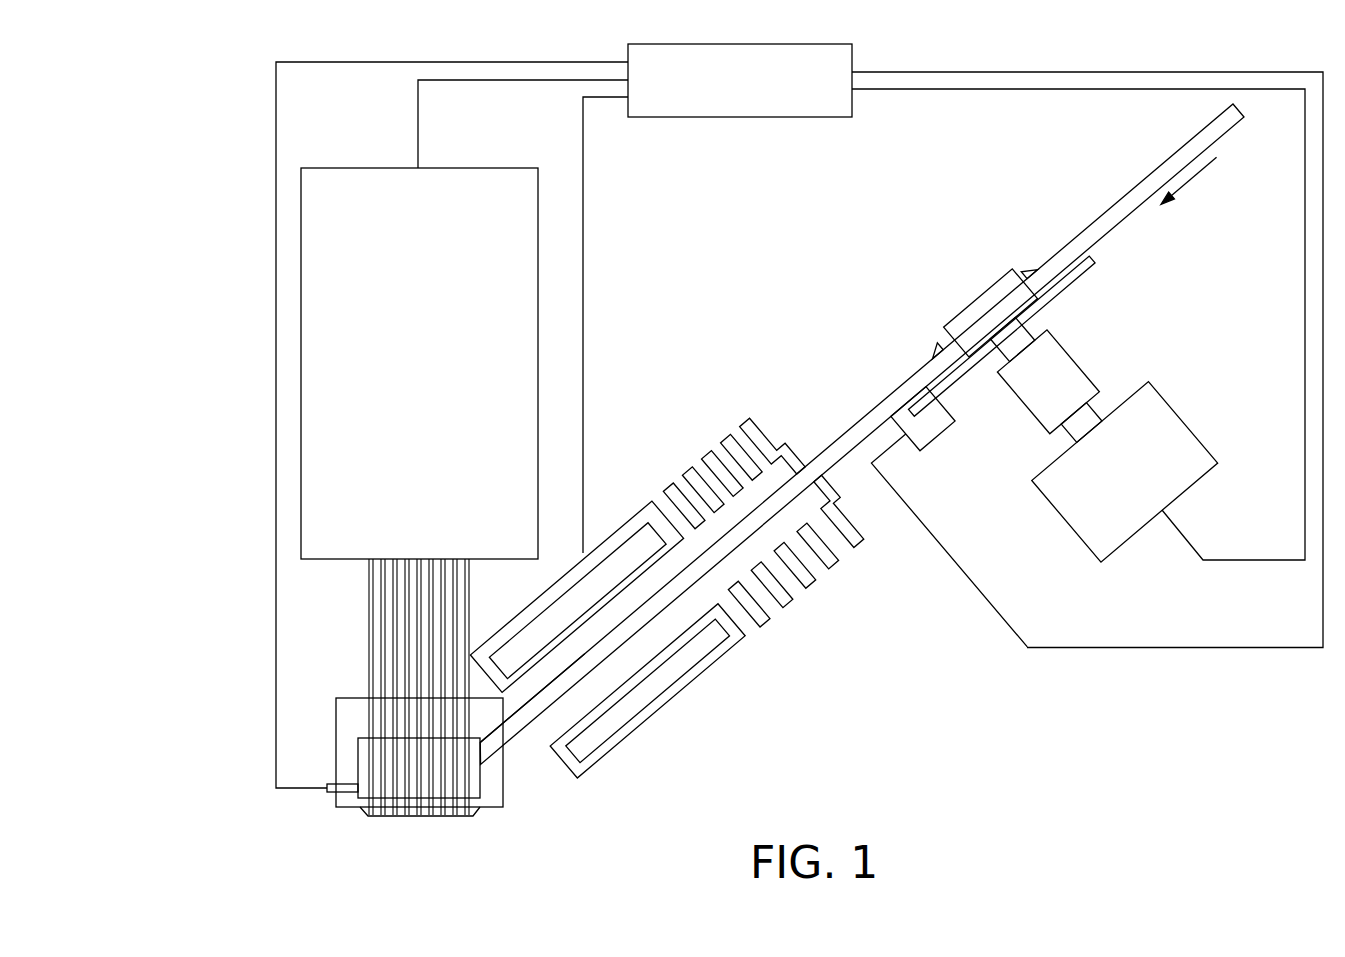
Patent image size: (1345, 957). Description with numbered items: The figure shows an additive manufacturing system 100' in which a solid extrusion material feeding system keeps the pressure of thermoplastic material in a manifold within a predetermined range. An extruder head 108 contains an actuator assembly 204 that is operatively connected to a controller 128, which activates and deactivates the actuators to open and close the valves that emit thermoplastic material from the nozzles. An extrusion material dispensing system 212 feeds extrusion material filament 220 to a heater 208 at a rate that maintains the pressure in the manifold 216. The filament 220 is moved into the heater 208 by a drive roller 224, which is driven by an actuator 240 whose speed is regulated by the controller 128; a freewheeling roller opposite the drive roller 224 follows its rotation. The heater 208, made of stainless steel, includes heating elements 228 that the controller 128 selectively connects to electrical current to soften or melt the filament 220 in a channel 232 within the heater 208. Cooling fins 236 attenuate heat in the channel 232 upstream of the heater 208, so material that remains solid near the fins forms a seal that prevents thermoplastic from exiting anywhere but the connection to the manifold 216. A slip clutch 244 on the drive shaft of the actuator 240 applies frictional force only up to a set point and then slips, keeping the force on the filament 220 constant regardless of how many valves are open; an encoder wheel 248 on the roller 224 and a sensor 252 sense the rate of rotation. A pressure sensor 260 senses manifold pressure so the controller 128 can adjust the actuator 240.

The additive manufacturing system 100' is at (731, 424).
The extruder head 108 is at (410, 698).
The controller 128 is at (738, 117).
The actuator assembly 204 is at (365, 168).
The heater 208 is at (695, 563).
The extrusion material dispensing system 212 is at (1038, 550).
The manifold 216 is at (482, 783).
The extrusion material filament 220 is at (1108, 210).
The drive roller 224 is at (977, 293).
The heating elements 228 is at (622, 542).
The channel 232 is at (558, 687).
The cooling fins 236 is at (748, 417).
The actuator 240 is at (1180, 422).
The slip clutch 244 is at (1092, 382).
The encoder wheel 248 is at (967, 378).
The sensor 252 is at (925, 447).
The pressure sensor 260 is at (330, 793).